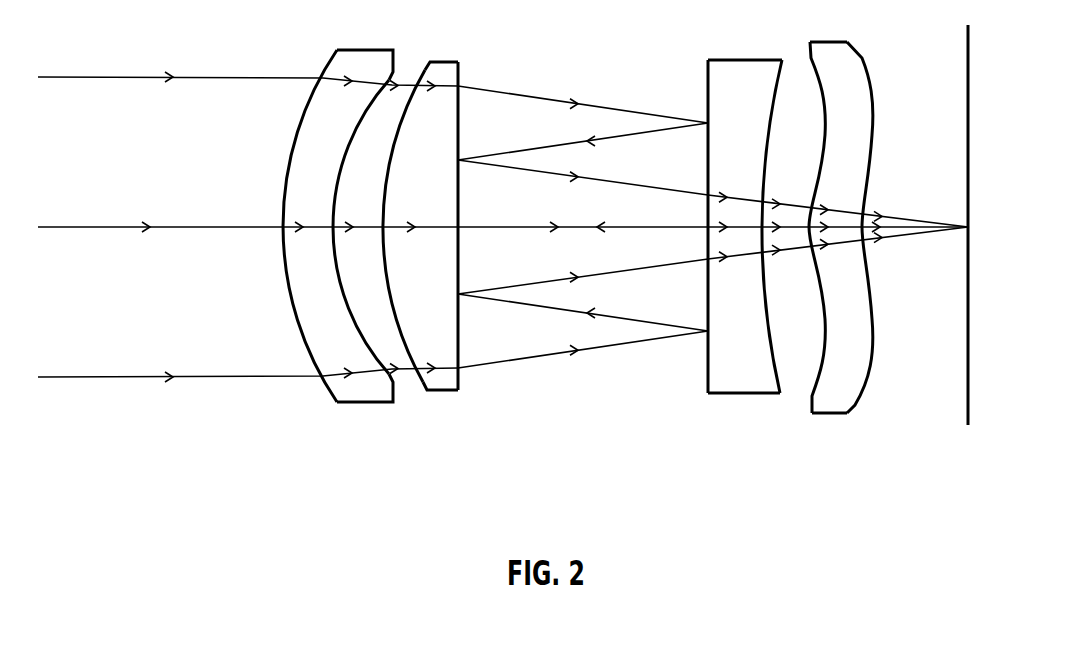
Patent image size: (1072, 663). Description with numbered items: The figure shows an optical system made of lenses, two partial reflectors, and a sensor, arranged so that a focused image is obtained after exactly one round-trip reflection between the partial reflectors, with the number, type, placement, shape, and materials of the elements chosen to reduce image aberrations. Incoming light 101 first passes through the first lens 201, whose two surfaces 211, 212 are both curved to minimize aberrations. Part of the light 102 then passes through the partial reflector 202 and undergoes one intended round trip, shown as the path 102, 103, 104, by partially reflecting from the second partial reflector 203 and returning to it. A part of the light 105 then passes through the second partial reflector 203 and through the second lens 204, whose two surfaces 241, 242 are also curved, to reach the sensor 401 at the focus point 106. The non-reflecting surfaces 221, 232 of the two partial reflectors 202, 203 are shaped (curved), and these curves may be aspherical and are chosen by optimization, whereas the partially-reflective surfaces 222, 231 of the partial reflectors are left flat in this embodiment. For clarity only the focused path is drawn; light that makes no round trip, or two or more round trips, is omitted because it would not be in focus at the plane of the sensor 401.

The incoming light 101 is at (127, 77).
The light passing through the partial reflector 102 is at (548, 100).
The light reflected from the second partial reflector 103 is at (607, 140).
The light returning toward the second partial reflector 104 is at (545, 175).
The light passing to the sensor 105 is at (932, 220).
The focus point 106 is at (968, 227).
The first lens 201 is at (319, 233).
The partial reflector 202 is at (462, 226).
The second partial reflector 203 is at (704, 229).
The second lens 204 is at (878, 214).
The surface of the first lens 211 is at (318, 365).
The surface of the first lens 212 is at (350, 374).
The non-reflecting surface of the partial reflector 221 is at (425, 382).
The partially-reflective surface of the partial reflector 222 is at (460, 363).
The partially-reflective surface of the second partial reflector 231 is at (708, 352).
The non-reflecting surface of the second partial reflector 232 is at (770, 375).
The surface of the second lens 241 is at (822, 383).
The surface of the second lens 242 is at (868, 385).
The sensor 401 is at (970, 388).